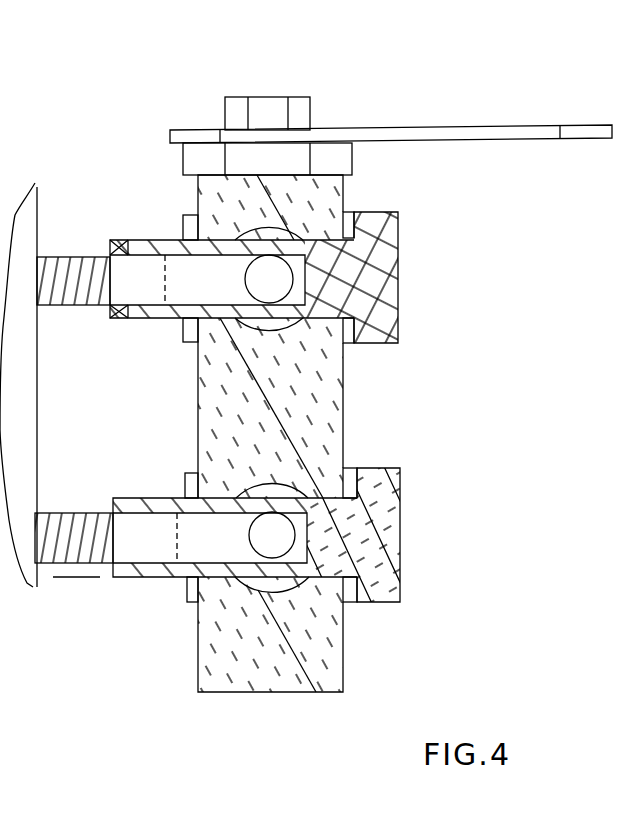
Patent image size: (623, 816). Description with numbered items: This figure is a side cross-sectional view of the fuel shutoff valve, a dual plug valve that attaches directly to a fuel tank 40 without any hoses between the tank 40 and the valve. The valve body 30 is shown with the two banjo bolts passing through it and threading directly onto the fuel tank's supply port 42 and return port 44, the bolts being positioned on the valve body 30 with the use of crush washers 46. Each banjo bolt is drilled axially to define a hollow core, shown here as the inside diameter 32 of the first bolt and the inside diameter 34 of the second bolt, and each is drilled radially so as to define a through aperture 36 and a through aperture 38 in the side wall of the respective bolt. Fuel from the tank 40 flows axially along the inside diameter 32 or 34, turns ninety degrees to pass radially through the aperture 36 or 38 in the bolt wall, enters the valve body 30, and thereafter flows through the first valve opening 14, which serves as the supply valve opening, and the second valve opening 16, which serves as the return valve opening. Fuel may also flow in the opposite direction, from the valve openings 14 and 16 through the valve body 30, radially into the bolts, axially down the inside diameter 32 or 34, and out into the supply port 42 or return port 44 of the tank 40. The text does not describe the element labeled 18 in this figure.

The first valve opening 14 is at (392, 277).
The second valve opening 16 is at (400, 524).
The plate 18 is at (466, 128).
The valve body 30 is at (346, 651).
The inside diameter 32 is at (157, 304).
The inside diameter 34 is at (138, 558).
The through aperture 36 is at (291, 262).
The through aperture 38 is at (286, 510).
The fuel tank 40 is at (40, 195).
The supply port 42 is at (67, 265).
The return port 44 is at (58, 518).
The crush washers 46 is at (188, 340).